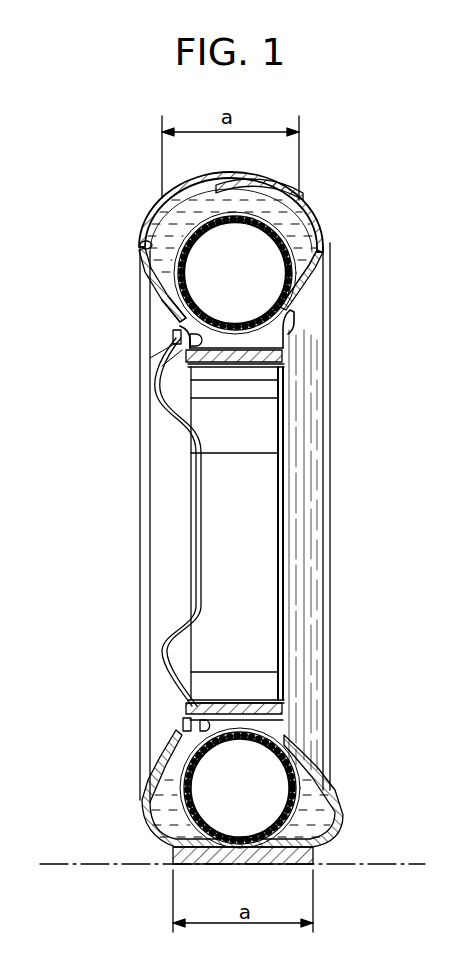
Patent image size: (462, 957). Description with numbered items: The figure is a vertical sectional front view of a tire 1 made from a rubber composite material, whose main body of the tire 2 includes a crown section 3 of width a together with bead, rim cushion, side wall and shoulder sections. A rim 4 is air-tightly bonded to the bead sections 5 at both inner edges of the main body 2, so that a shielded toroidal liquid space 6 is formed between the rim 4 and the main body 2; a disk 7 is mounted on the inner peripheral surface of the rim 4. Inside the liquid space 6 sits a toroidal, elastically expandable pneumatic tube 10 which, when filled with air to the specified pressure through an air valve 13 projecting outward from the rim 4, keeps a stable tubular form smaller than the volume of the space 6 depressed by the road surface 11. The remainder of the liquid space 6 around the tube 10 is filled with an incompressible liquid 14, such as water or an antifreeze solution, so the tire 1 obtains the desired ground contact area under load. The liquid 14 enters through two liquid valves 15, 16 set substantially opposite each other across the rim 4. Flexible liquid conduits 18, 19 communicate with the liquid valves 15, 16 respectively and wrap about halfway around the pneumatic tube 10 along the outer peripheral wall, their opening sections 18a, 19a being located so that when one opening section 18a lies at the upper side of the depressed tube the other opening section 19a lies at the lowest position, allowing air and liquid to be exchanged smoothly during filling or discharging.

The tire 1 is at (137, 228).
The main body of the tire 2 is at (151, 213).
The crown section 3 is at (263, 173).
The rim 4 is at (148, 286).
The bead sections 5 is at (300, 310).
The liquid space 6 is at (138, 245).
The disk 7 is at (182, 432).
The pneumatic tube 10 is at (305, 212).
The road surface 11 is at (345, 867).
The air valve 13 is at (168, 340).
The liquid 14 is at (305, 240).
The liquid valve 15 is at (176, 348).
The liquid valve 16 is at (183, 724).
The liquid conduit 18 is at (328, 250).
The opening section 18a is at (223, 176).
The liquid conduit 19 is at (332, 815).
The opening section 19a is at (230, 855).